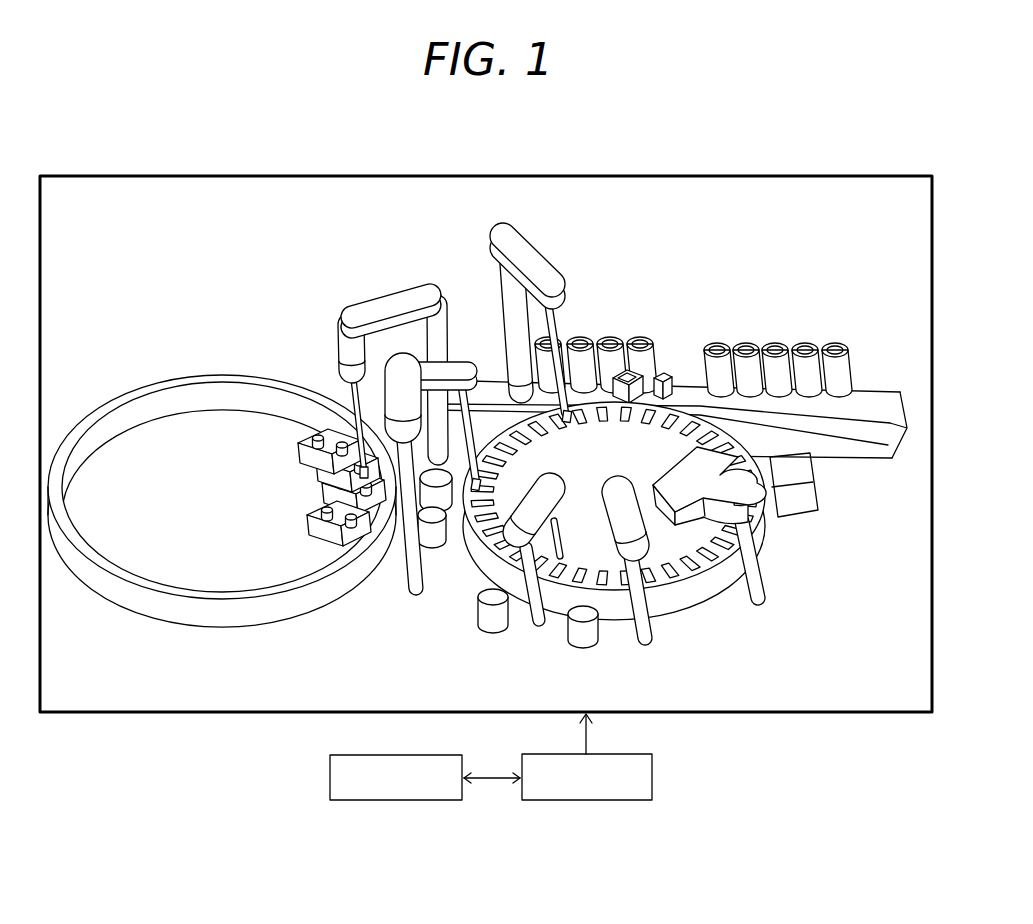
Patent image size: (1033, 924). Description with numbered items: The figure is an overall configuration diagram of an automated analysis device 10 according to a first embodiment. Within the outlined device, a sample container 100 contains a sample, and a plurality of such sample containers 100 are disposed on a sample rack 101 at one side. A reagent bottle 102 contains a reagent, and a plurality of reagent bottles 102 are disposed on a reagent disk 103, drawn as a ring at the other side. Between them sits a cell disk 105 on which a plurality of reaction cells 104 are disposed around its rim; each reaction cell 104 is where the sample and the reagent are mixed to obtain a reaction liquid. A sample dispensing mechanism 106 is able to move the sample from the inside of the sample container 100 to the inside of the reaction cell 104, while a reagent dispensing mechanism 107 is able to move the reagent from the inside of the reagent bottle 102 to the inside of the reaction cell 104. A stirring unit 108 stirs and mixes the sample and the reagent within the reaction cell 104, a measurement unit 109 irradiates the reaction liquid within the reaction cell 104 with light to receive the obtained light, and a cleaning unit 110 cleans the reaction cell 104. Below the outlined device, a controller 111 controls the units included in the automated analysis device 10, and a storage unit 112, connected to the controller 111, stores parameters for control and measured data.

The automated analysis device 10 is at (650, 183).
The sample container 100 is at (727, 348).
The sample rack 101 is at (862, 380).
The reagent bottle 102 is at (325, 420).
The reagent disk 103 is at (250, 385).
The reaction cell 104 is at (688, 565).
The cell disk 105 is at (672, 610).
The sample dispensing mechanism 106 is at (538, 268).
The reagent dispensing mechanism 107 is at (392, 296).
The stirring unit 108 is at (528, 640).
The measurement unit 109 is at (805, 503).
The cleaning unit 110 is at (777, 588).
The controller 111 is at (652, 778).
The storage unit 112 is at (330, 781).